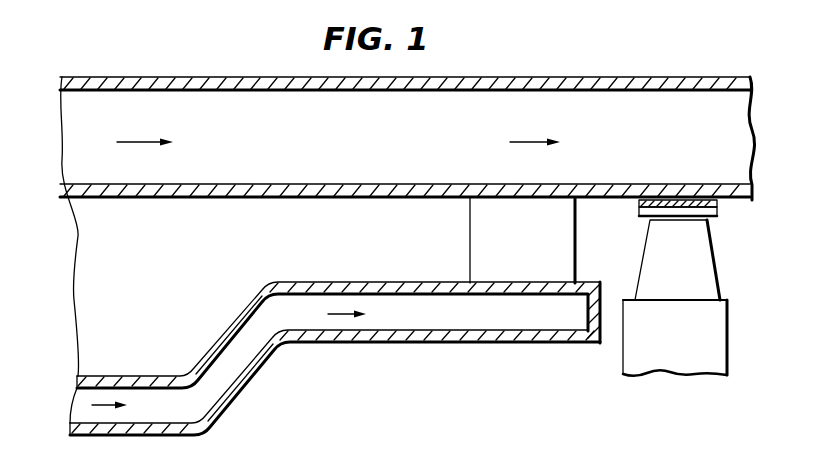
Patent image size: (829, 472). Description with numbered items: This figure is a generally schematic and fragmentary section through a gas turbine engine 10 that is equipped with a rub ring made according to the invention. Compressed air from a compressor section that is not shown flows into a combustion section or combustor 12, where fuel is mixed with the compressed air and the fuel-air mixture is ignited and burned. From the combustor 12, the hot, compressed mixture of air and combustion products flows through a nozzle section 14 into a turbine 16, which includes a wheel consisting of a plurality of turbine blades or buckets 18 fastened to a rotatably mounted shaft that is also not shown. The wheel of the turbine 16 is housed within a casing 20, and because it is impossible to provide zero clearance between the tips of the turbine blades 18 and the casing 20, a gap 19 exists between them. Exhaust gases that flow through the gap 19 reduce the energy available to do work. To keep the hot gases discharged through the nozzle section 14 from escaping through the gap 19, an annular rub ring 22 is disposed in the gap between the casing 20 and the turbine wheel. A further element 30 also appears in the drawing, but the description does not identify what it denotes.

The gas turbine exhaust/inlet duct assembly 10 is at (193, 52).
The main duct 12 is at (78, 237).
The strut / connecting passage 14 is at (470, 243).
The support block 16 is at (734, 302).
The tapered nozzle member 18 is at (712, 250).
The hatched plate 19 is at (640, 212).
The lower wall of main duct 20 is at (576, 186).
The mounting plate assembly 22 is at (730, 216).
The secondary duct 30 is at (335, 377).